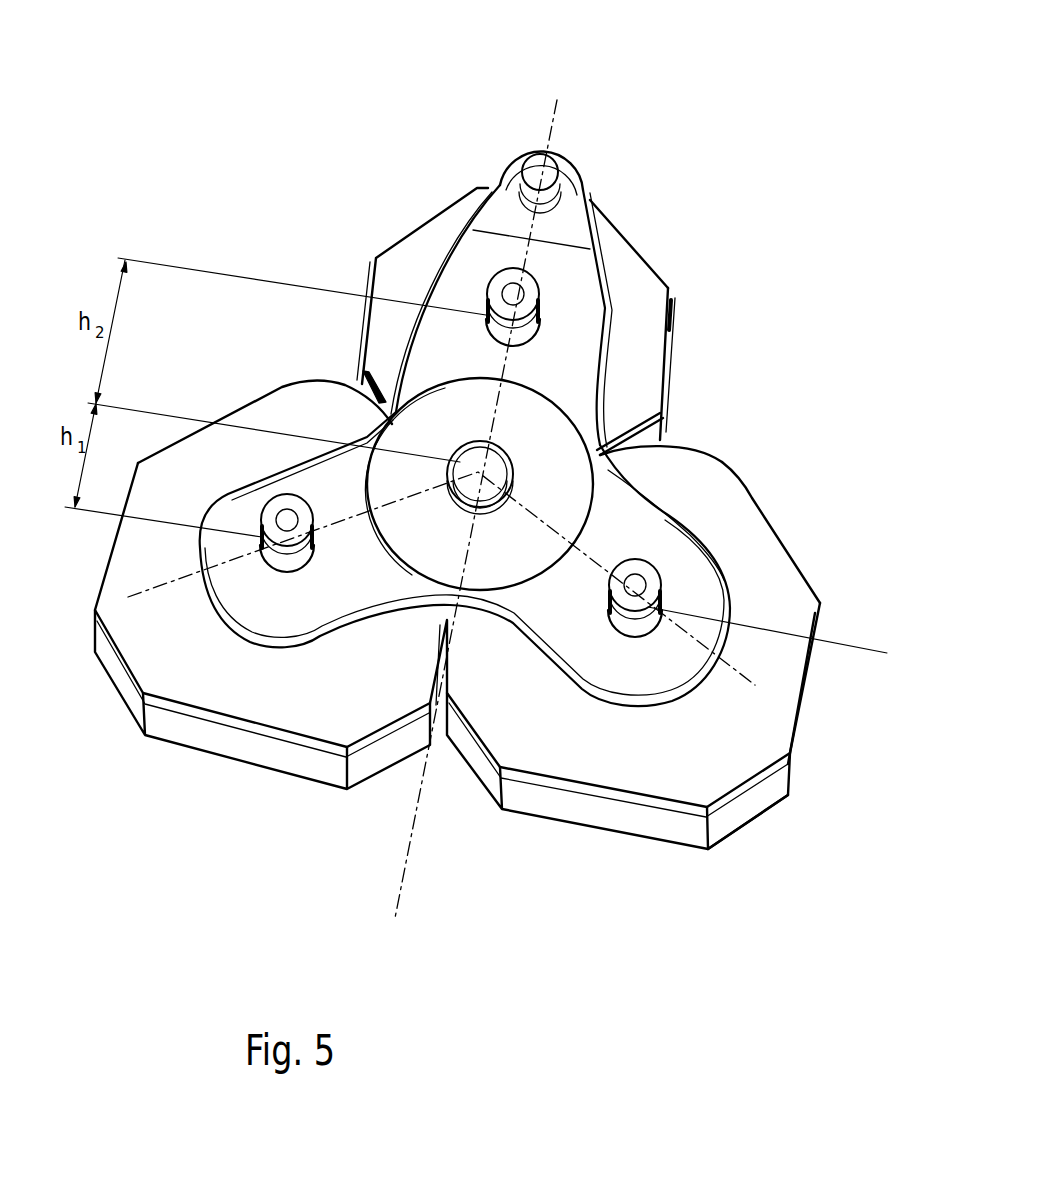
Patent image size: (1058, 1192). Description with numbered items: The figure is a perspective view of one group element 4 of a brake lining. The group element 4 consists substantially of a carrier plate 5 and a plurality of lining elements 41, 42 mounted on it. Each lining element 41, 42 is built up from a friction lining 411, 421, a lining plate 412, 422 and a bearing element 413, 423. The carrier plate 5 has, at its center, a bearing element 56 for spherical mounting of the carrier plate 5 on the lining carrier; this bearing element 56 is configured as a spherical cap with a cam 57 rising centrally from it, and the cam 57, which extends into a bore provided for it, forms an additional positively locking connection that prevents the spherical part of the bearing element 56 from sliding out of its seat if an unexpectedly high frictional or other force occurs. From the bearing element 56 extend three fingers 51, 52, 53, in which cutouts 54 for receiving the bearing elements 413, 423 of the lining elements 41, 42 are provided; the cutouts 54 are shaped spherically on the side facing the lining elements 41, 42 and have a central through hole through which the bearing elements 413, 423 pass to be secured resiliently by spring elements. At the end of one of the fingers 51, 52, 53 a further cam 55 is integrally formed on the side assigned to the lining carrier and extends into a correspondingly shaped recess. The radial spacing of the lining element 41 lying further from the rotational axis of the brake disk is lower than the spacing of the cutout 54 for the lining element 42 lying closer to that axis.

The group element 4 is at (743, 337).
The lining element 41 is at (307, 687).
The friction lining 411 is at (757, 823).
The lining plate 412 is at (683, 645).
The bearing element 413 is at (262, 555).
The lining element 42 is at (629, 284).
The friction lining 421 is at (672, 368).
The lining plate 422 is at (641, 298).
The bearing element 423 is at (573, 187).
The carrier plate 5 is at (337, 476).
The finger 51 is at (600, 517).
The finger 52 is at (237, 513).
The finger 53 is at (457, 297).
The cutout 54 is at (660, 612).
The cam 55 is at (540, 170).
The bearing element 56 is at (493, 555).
The cam 57 is at (461, 555).